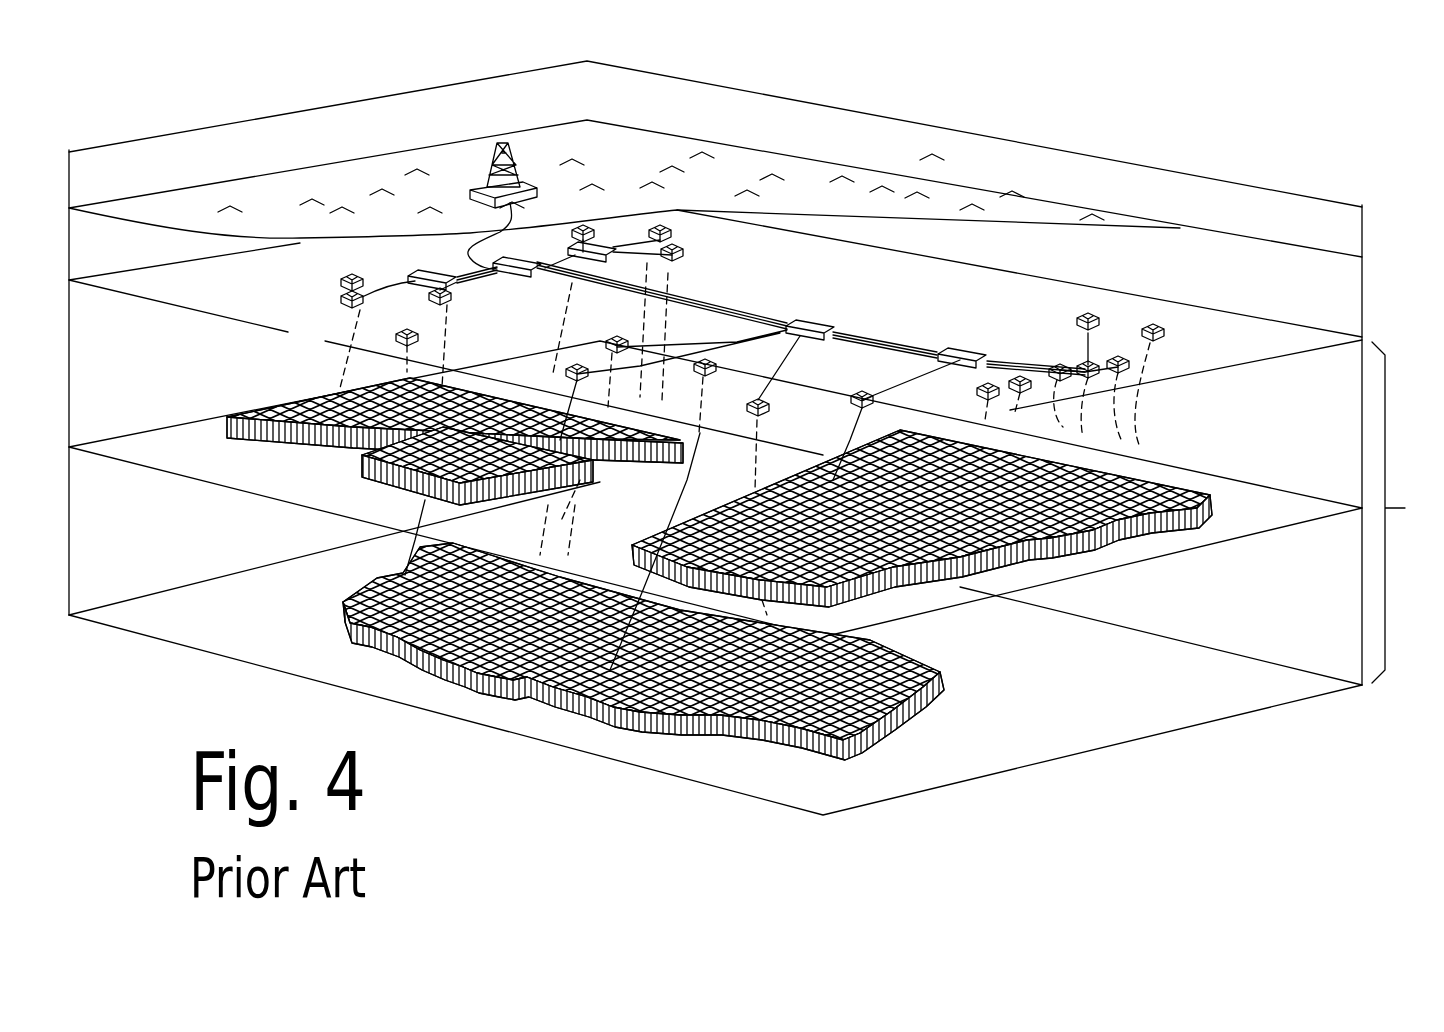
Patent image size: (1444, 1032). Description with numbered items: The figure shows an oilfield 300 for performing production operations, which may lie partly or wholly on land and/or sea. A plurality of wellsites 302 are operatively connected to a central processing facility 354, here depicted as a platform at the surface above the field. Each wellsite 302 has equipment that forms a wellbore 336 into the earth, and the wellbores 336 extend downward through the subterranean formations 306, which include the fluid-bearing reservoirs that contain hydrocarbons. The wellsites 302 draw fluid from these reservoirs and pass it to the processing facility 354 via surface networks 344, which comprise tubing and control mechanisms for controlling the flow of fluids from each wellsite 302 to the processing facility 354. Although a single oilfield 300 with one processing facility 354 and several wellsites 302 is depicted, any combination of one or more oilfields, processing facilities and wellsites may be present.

The oilfield 300 is at (146, 111).
The wellsite 302 is at (1158, 333).
The subterranean formation 306 is at (1408, 512).
The wellbore 336 is at (1180, 403).
The surface network 344 is at (393, 293).
The central processing facility 354 is at (484, 162).